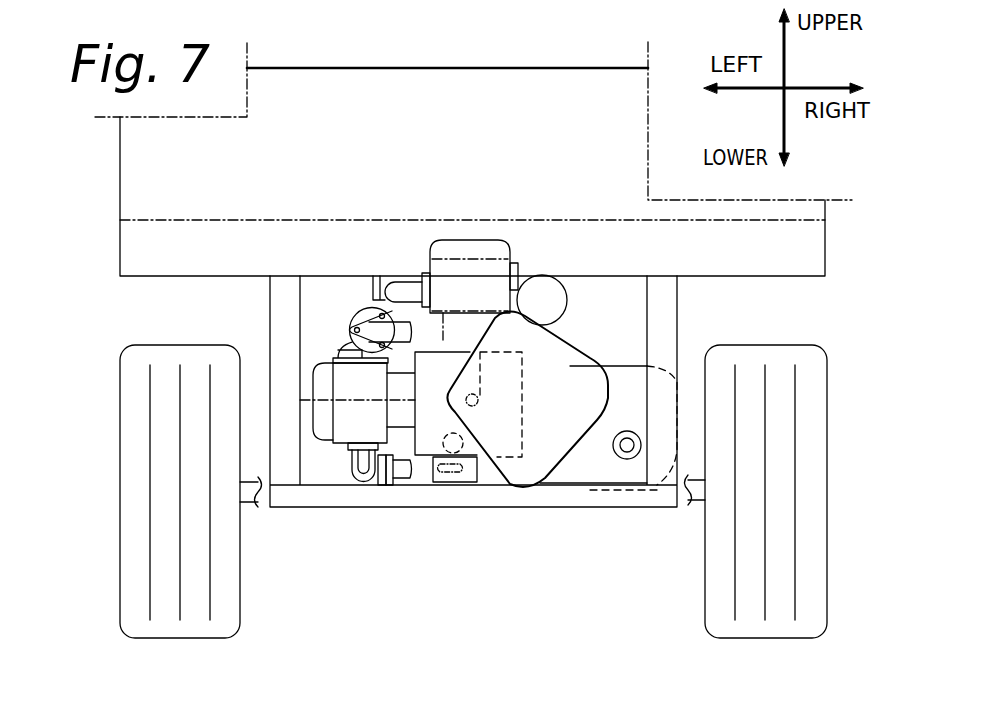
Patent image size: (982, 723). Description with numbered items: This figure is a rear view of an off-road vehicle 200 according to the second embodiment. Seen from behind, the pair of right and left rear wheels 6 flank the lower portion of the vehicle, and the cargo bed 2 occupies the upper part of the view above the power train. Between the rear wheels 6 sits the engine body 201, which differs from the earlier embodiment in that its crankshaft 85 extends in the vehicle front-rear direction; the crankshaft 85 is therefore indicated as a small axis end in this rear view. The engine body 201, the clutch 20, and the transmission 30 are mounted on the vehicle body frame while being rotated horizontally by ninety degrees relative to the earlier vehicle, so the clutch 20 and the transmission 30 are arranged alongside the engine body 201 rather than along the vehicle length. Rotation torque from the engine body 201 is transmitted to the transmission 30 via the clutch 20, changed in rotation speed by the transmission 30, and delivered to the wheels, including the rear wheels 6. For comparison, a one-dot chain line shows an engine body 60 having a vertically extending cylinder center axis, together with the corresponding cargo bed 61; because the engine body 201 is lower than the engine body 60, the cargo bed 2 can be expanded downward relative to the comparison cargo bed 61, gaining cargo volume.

The cargo bed 2 is at (452, 68).
The vehicle 200 is at (100, 258).
The cargo bed 61 is at (218, 222).
The engine body 60 is at (465, 240).
The clutch 20 is at (572, 342).
The crankshaft 85 is at (479, 407).
The transmission 30 is at (680, 400).
The engine body 201 is at (338, 466).
The rear wheels 6 is at (118, 398).